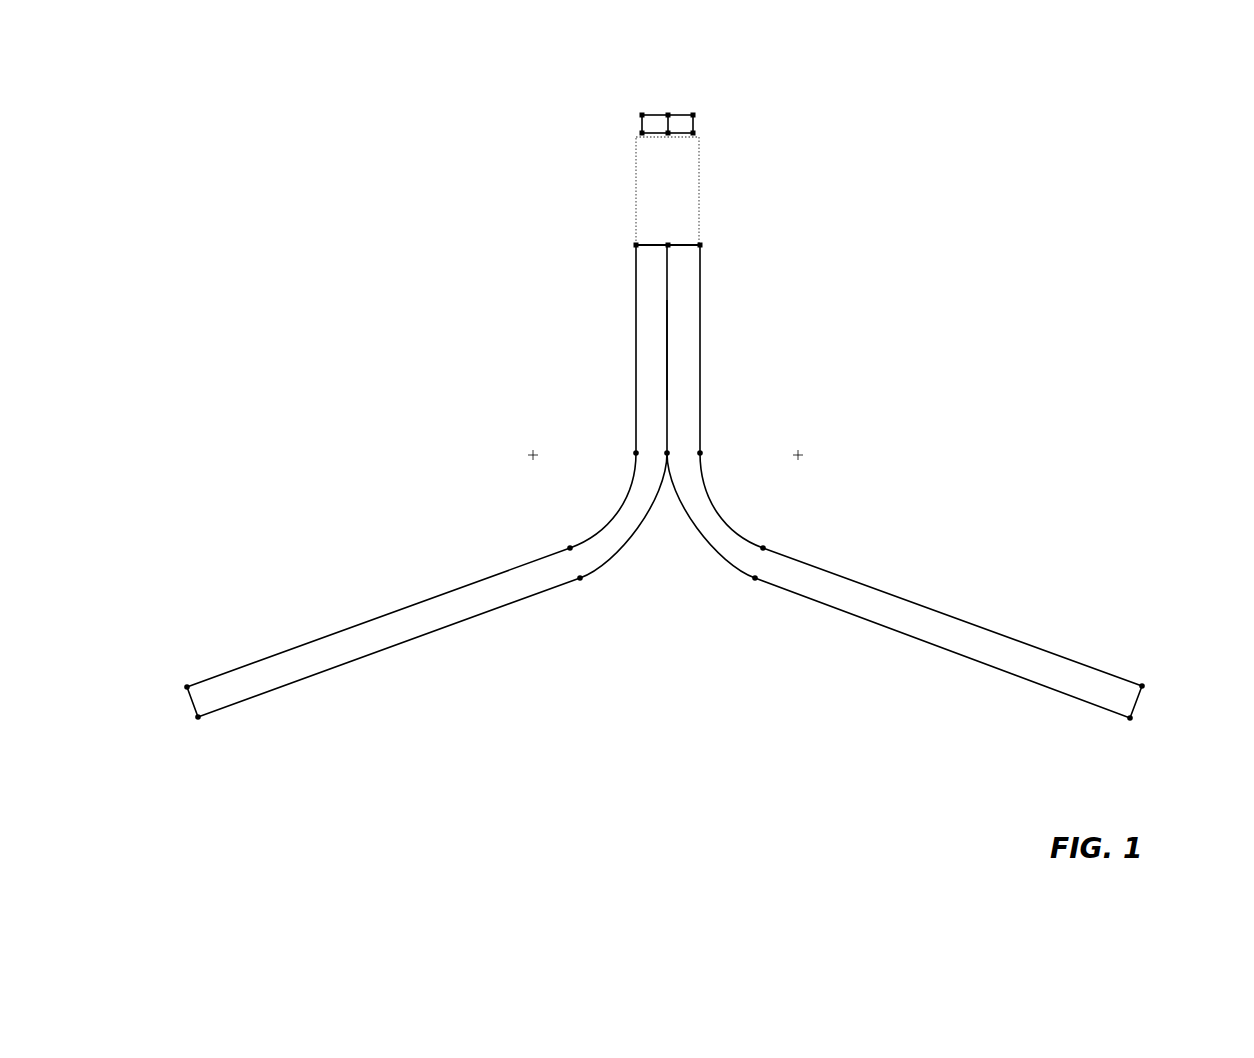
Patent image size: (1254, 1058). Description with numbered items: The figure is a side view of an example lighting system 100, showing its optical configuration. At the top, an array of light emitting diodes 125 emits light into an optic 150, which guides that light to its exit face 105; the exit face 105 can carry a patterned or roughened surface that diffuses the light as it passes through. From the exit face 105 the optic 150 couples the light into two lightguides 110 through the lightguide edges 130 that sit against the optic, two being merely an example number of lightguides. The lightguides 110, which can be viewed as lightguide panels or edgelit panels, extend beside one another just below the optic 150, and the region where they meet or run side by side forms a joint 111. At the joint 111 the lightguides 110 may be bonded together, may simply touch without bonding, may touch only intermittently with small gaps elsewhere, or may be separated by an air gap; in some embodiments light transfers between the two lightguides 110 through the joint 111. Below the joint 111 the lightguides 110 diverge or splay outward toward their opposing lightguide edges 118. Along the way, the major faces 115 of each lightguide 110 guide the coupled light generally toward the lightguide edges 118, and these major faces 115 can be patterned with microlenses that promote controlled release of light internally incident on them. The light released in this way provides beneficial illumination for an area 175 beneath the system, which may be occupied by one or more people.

The lighting system 100 is at (888, 766).
The exit face 105 is at (648, 245).
The lightguide 110 is at (435, 615).
The joint 111 is at (672, 345).
The major face 115 is at (346, 628).
The lightguide edge 118 is at (187, 703).
The array of light emitting diodes 125 is at (642, 123).
The lightguide edge 130 is at (650, 256).
The optic 150 is at (667, 191).
The area 175 is at (648, 801).